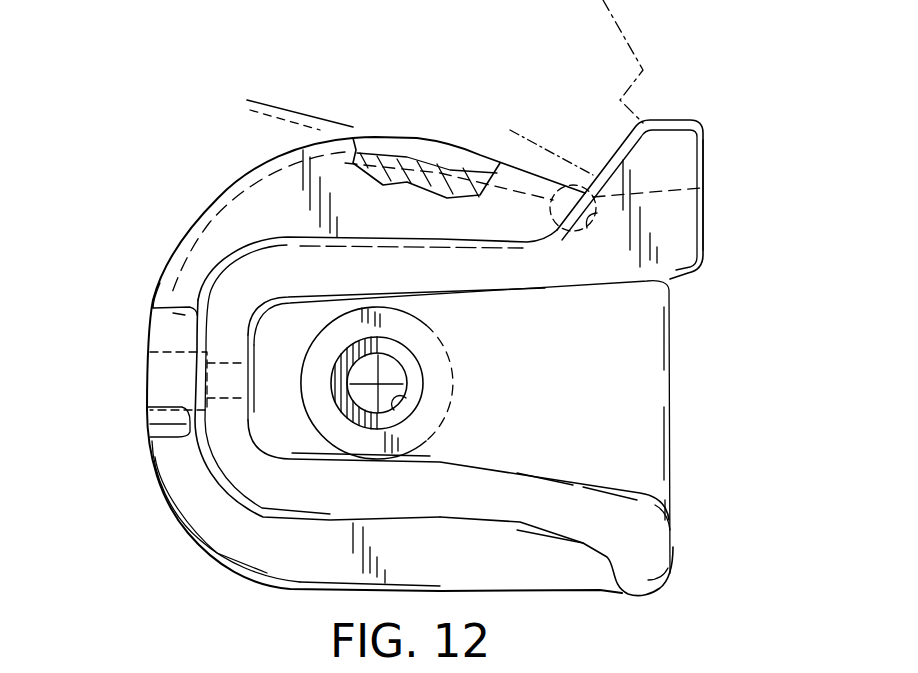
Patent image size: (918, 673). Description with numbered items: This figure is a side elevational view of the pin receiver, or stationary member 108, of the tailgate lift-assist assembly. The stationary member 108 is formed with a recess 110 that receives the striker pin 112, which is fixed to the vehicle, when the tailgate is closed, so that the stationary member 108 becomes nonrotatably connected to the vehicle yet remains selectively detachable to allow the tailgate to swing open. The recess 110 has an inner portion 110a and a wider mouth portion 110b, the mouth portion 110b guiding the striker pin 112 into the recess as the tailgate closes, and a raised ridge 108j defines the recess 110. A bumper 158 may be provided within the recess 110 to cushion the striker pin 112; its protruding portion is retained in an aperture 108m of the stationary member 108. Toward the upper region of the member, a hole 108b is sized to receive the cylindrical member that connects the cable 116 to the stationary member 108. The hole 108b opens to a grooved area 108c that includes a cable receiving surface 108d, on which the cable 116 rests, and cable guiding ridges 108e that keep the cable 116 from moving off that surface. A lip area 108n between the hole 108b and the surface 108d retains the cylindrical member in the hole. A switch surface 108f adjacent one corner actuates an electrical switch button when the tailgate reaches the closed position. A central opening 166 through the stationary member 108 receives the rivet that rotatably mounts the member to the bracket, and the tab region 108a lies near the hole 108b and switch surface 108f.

The stationary member 108 is at (730, 127).
The tab portion of clip body 108a is at (622, 116).
The hole 108b is at (697, 188).
The grooved area 108c is at (392, 127).
The cable receiving surface 108d is at (425, 165).
The cable guiding ridges 108e is at (380, 140).
The switch surface 108f is at (703, 222).
The raised ridge 108j is at (407, 500).
The aperture 108m is at (165, 388).
The lip area 108n is at (562, 182).
The recess 110 is at (628, 383).
The inner portion 110a is at (330, 455).
The mouth portion 110b is at (653, 451).
The striker pin 112 is at (440, 341).
The cable 116 is at (275, 99).
The bumper 158 is at (273, 457).
The central opening 166 is at (401, 398).